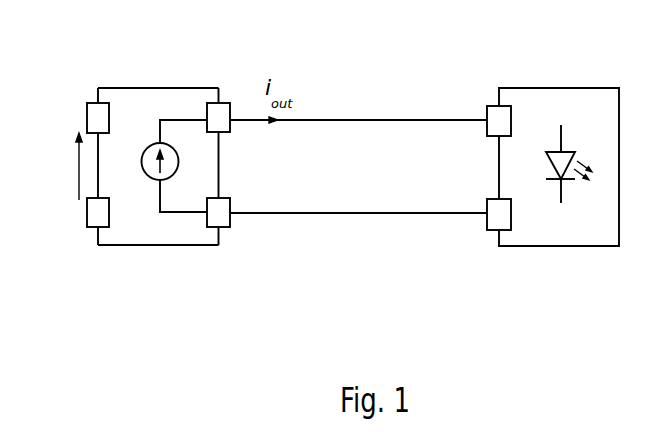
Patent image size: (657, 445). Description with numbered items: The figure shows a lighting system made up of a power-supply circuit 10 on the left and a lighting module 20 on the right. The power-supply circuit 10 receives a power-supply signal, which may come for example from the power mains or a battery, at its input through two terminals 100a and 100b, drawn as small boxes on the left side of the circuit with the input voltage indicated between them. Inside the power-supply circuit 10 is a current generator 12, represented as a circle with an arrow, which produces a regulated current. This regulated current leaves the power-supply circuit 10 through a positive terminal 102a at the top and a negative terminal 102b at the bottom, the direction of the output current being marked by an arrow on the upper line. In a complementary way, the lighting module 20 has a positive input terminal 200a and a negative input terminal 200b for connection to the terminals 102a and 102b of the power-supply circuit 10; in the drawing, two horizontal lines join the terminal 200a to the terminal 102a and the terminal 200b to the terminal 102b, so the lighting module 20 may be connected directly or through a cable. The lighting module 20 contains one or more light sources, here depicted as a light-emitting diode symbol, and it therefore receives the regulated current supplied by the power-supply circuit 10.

The power-supply circuit 10 is at (139, 88).
The current generator 12 is at (150, 147).
The input terminal 100a is at (89, 97).
The input terminal 100b is at (89, 234).
The positive terminal 102a is at (221, 97).
The negative terminal 102b is at (221, 234).
The lighting module 20 is at (560, 88).
The positive input terminal 200a is at (492, 100).
The negative input terminal 200b is at (490, 237).